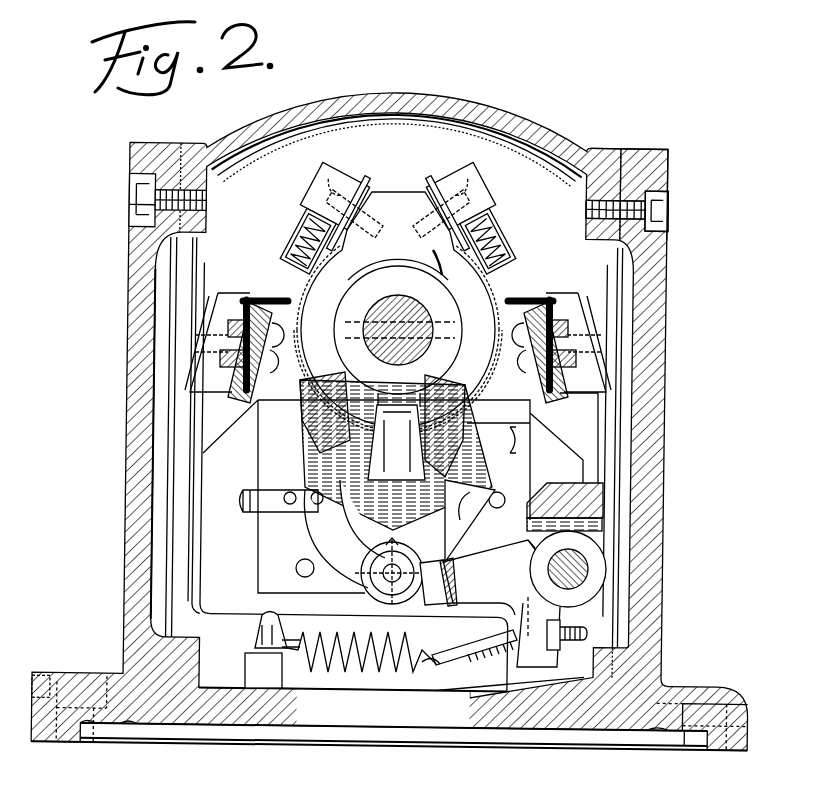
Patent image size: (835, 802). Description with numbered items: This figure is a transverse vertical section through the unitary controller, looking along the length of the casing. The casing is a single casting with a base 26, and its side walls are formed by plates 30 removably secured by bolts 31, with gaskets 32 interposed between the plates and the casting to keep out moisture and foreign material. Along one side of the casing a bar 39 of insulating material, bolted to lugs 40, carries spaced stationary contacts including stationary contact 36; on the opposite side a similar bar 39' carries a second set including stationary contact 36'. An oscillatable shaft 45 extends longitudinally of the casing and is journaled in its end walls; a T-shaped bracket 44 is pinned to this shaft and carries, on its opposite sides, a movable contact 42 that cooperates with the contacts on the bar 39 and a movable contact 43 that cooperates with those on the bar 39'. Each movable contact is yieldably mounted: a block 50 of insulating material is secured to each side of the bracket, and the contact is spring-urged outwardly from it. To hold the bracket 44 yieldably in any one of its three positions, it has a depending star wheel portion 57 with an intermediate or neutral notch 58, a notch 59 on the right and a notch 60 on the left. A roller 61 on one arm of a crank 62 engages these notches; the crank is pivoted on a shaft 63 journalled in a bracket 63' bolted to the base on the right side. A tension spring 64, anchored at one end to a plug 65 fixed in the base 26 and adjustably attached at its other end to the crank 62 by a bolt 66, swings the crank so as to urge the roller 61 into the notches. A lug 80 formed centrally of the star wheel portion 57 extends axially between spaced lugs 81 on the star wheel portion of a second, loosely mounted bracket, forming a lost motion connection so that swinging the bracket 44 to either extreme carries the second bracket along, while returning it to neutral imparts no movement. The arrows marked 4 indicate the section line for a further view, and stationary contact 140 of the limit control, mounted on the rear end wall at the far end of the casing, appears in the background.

The section line 4 is at (448, 160).
The base 26 is at (205, 742).
The plates 30 is at (150, 470).
The bolts 31 is at (665, 203).
The gaskets 32 is at (622, 155).
The stationary contact 36 is at (554, 334).
The stationary contact 36' is at (241, 330).
The bar of insulating material 39 is at (578, 361).
The bar of insulating material 39' is at (217, 359).
The lugs 40 is at (600, 305).
The movable contact 42 is at (508, 252).
The movable contact 43 is at (290, 240).
The T-shaped bracket 44 is at (398, 192).
The oscillatable shaft 45 is at (398, 312).
The block of insulating material 50 is at (345, 190).
The star wheel portion 57 is at (460, 520).
The neutral notch 58 is at (385, 532).
The notch 59 is at (490, 510).
The notch 60 is at (325, 512).
The roller 61 is at (360, 570).
The crank 62 is at (500, 587).
The shaft 63 is at (580, 599).
The bracket 63' is at (625, 507).
The tension spring 64 is at (360, 672).
The plug 65 is at (255, 672).
The bolt 66 is at (450, 670).
The lug 80 is at (400, 470).
The spaced lugs 81 is at (302, 433).
The stationary contact 140 is at (272, 500).